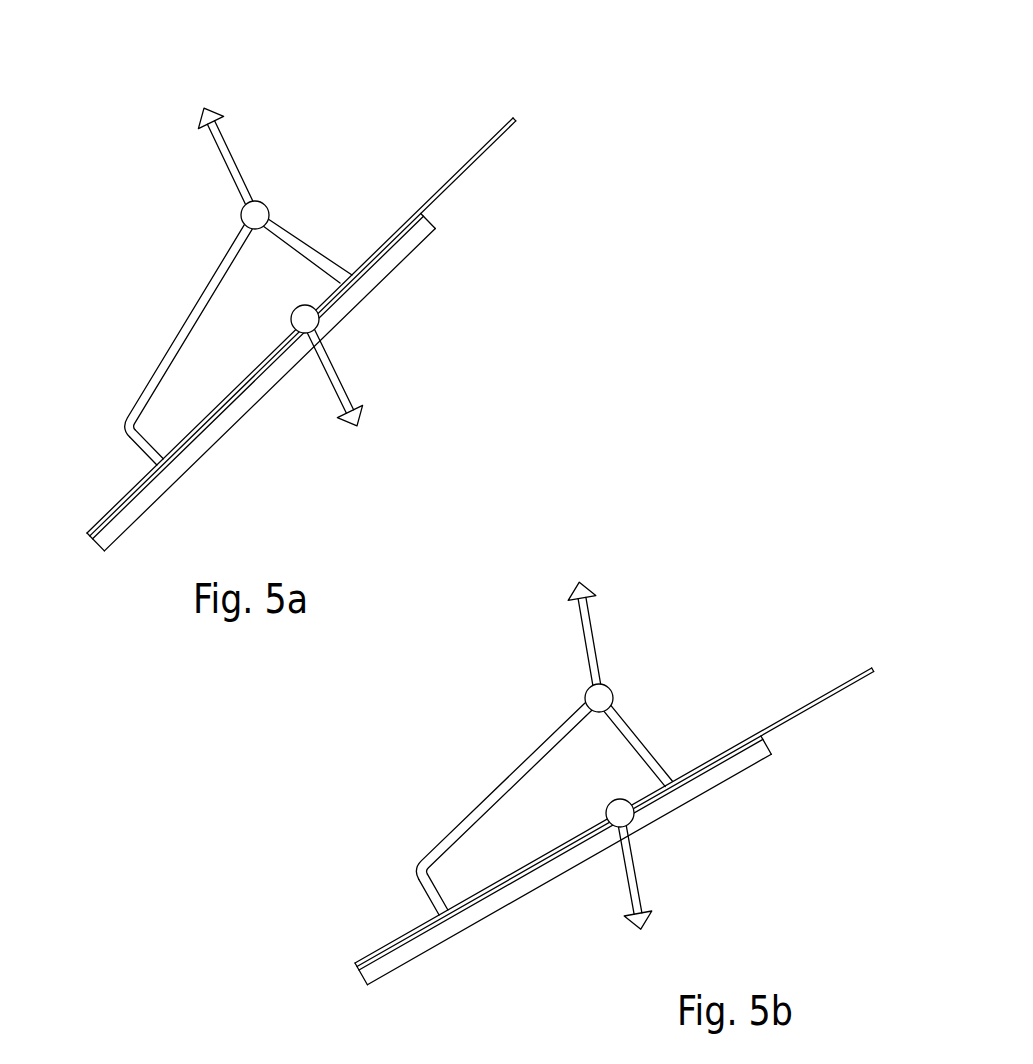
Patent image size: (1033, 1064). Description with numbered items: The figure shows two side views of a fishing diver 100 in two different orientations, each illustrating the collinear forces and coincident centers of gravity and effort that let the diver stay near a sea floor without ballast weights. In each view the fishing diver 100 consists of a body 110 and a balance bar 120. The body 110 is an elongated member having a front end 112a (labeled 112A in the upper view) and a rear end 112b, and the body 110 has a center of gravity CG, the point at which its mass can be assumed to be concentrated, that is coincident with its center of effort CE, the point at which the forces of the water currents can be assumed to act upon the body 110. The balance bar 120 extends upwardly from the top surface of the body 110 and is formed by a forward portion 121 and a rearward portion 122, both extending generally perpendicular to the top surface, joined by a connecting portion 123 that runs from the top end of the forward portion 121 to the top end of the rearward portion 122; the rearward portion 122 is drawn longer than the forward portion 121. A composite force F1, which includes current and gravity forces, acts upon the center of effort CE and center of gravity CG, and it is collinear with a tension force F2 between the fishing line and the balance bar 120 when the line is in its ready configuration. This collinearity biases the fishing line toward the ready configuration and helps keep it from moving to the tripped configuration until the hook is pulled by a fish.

In FIG. 5A, the fishing diver 100 is at (107, 97).
In FIG. 5B, the fishing diver 100 is at (733, 602).
In FIG. 5A, the body 110 is at (437, 185).
In FIG. 5B, the body 110 is at (757, 732).
In FIG. 5B, the front end 112a is at (365, 983).
In FIG. 5A, the front end 112A is at (87, 533).
In FIG. 5A, the rear end 112b is at (513, 118).
In FIG. 5B, the rear end 112b is at (844, 639).
In FIG. 5A, the balance bar 120 is at (199, 297).
In FIG. 5B, the balance bar 120 is at (507, 755).
In FIG. 5A, the forward portion 121 is at (141, 449).
In FIG. 5B, the forward portion 121 is at (430, 900).
In FIG. 5A, the rearward portion 122 is at (316, 249).
In FIG. 5B, the rearward portion 122 is at (648, 745).
In FIG. 5A, the connecting portion 123 is at (197, 303).
In FIG. 5B, the connecting portion 123 is at (501, 783).
In FIG. 5A, the center of effort CE is at (323, 327).
In FIG. 5B, the center of effort CE is at (632, 820).
In FIG. 5A, the center of gravity CG is at (300, 333).
In FIG. 5B, the center of gravity CG is at (577, 868).
In FIG. 5A, the composite force F1 is at (343, 386).
In FIG. 5B, the composite force F1 is at (637, 882).
In FIG. 5A, the tension force F2 is at (223, 165).
In FIG. 5B, the tension force F2 is at (581, 617).